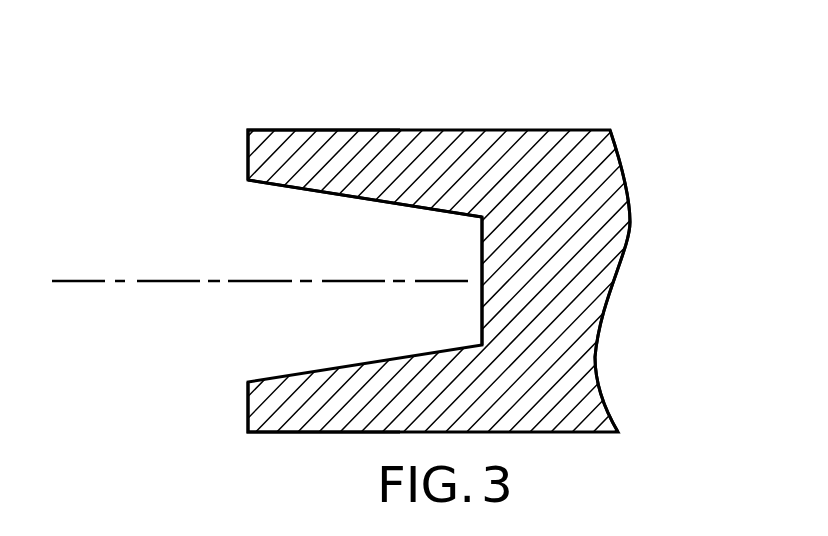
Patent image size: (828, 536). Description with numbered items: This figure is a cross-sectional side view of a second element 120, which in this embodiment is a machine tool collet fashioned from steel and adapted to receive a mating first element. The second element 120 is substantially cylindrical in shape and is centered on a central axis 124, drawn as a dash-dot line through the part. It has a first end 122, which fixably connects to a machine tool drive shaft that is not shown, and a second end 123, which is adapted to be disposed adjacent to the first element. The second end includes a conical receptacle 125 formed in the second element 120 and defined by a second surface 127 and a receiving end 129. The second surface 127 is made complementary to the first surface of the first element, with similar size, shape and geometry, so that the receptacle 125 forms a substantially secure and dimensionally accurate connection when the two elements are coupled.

The second element 120 is at (459, 107).
The first end 122 is at (628, 190).
The second end 123 is at (248, 152).
The central axis 124 is at (142, 281).
The conical receptacle 125 is at (246, 361).
The second surface 127 is at (326, 193).
The receiving end 129 is at (482, 298).